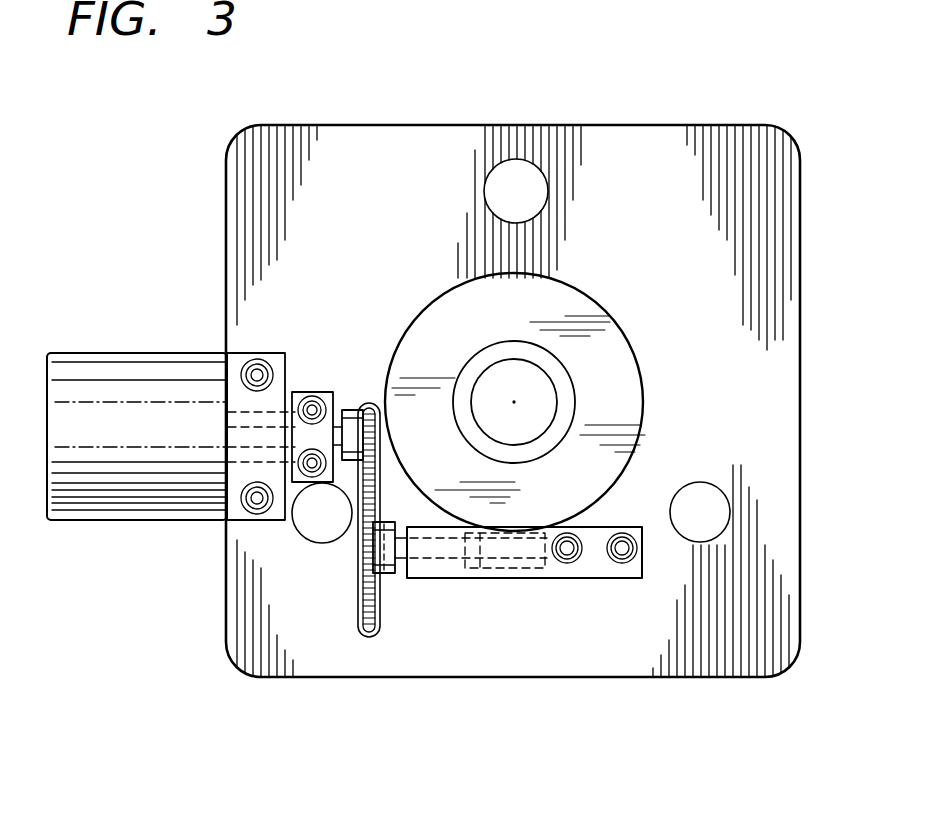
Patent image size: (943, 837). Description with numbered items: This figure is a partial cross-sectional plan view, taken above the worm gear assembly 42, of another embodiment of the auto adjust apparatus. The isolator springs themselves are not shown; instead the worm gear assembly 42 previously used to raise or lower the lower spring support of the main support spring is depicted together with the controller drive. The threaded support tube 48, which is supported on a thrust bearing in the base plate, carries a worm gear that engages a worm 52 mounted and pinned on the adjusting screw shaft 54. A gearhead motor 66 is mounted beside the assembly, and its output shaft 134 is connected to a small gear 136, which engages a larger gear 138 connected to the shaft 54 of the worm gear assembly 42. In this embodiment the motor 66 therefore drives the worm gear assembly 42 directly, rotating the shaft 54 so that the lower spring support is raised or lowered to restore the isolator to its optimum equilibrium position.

The worm gear assembly 42 is at (568, 597).
The threaded support tube 48 is at (570, 378).
The worm 52 is at (492, 568).
The adjusting screw shaft 54 is at (397, 563).
The gearhead motor 66 is at (73, 373).
The output shaft 134 is at (344, 406).
The small gear 136 is at (355, 408).
The larger gear 138 is at (360, 573).